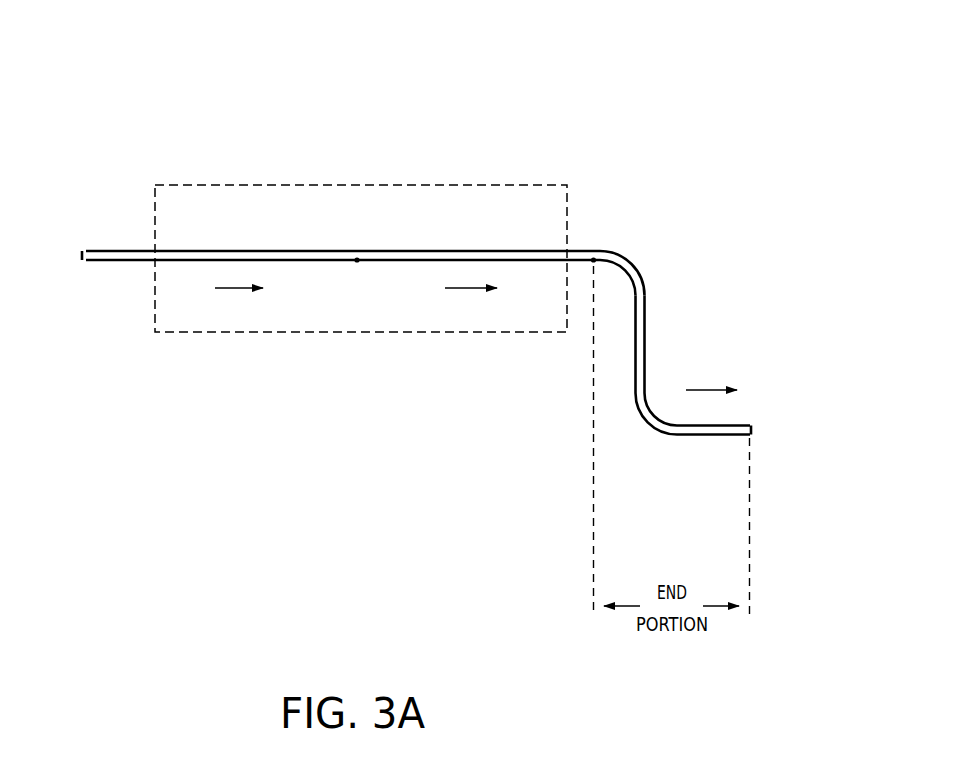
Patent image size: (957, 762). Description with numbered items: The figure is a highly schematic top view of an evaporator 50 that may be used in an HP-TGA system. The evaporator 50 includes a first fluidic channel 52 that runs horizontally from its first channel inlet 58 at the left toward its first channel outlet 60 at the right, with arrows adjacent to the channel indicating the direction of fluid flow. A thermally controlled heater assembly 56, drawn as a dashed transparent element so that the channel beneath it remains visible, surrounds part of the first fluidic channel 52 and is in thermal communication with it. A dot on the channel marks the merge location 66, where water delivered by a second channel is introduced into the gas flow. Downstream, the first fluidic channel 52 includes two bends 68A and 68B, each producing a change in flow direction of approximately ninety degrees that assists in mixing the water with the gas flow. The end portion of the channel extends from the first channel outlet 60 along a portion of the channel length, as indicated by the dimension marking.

The evaporator 50 is at (658, 124).
The first fluidic channel 52 is at (107, 251).
The thermally controlled heater assembly 56 is at (530, 228).
The first channel inlet 58 is at (75, 256).
The first channel outlet 60 is at (760, 429).
The merge location 66 is at (357, 262).
The bend 68A is at (636, 262).
The bend 68B is at (645, 428).